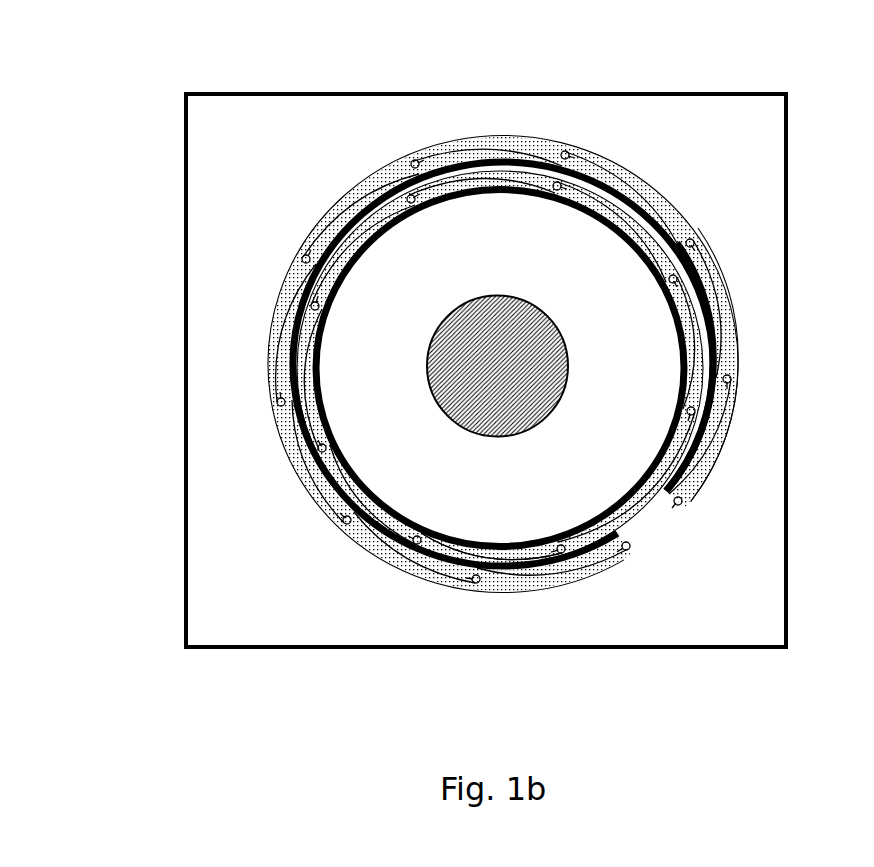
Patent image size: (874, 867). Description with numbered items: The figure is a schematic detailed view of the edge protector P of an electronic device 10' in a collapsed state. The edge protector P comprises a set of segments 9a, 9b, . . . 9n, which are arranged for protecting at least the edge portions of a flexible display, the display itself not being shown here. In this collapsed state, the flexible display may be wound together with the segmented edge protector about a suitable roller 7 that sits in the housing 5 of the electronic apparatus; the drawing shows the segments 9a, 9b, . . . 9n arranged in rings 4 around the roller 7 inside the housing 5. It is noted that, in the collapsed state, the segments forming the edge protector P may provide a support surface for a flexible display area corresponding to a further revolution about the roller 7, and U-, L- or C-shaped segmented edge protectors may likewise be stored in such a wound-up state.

The sealing device 10' is at (451, 341).
The housing 5 is at (790, 156).
The inner ring of segments 4 is at (500, 368).
The segment 9a is at (718, 450).
The segment 9b is at (718, 300).
The segment 9n is at (528, 550).
The roller 7 is at (541, 423).
The edge protector P is at (648, 552).